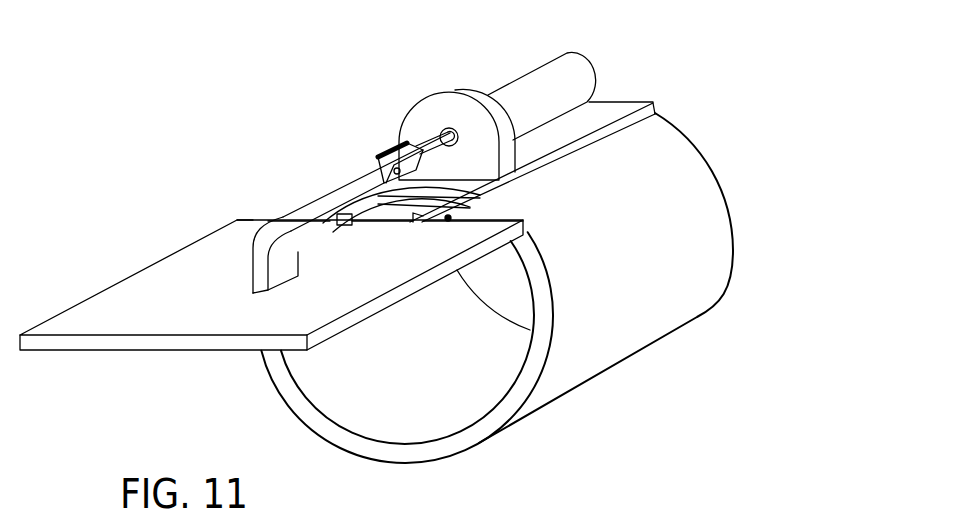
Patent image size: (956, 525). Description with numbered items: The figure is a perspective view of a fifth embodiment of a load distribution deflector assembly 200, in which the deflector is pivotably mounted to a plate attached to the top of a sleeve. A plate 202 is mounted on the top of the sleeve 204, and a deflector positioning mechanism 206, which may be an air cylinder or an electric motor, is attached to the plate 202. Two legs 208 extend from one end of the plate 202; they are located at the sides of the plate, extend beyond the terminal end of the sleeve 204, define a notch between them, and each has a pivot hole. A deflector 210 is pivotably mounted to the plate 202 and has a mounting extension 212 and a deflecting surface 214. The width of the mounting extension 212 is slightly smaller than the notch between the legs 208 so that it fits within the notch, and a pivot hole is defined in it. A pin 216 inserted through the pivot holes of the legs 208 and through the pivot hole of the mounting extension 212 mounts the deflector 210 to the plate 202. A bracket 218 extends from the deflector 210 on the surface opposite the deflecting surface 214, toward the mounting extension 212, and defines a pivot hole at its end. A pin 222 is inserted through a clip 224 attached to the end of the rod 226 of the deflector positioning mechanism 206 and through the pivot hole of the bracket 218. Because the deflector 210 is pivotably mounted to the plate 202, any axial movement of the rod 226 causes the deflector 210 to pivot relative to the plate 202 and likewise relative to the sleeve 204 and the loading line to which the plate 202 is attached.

The deflector assembly 200 is at (256, 106).
The plate 202 is at (613, 107).
The sleeve 204 is at (707, 187).
The deflector positioning mechanism 206 is at (538, 73).
The legs 208 is at (455, 207).
The deflector 210 is at (107, 307).
The mounting extension 212 is at (390, 215).
The deflecting surface 214 is at (193, 272).
The pin 216 is at (448, 222).
The bracket 218 is at (282, 238).
The pin 222 is at (367, 170).
The clip 224 is at (392, 150).
The rod 226 is at (432, 135).